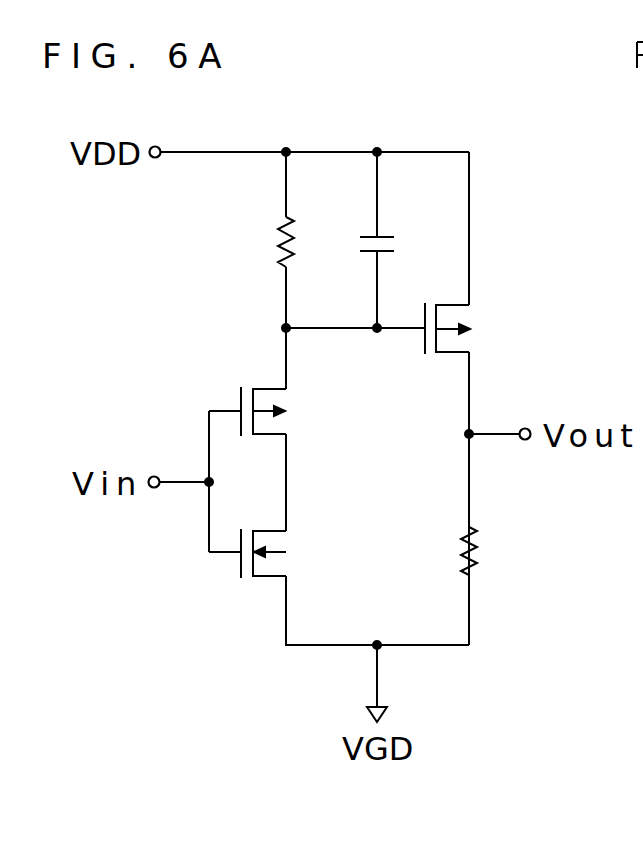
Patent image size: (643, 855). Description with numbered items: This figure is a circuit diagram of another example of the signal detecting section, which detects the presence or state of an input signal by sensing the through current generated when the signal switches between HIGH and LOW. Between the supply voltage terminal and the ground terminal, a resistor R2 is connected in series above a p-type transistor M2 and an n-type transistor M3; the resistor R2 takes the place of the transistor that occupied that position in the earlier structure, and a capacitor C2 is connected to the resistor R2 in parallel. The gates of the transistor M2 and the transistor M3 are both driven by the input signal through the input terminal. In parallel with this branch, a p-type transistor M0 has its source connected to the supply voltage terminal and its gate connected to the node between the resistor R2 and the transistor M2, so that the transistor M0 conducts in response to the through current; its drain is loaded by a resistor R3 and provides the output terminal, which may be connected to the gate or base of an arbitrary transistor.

The resistor R2 is at (273, 240).
The capacitor C2 is at (400, 242).
The p-type transistor M0 is at (475, 318).
The p-type transistor M2 is at (290, 401).
The n-type transistor M3 is at (290, 562).
The resistor R3 is at (458, 548).